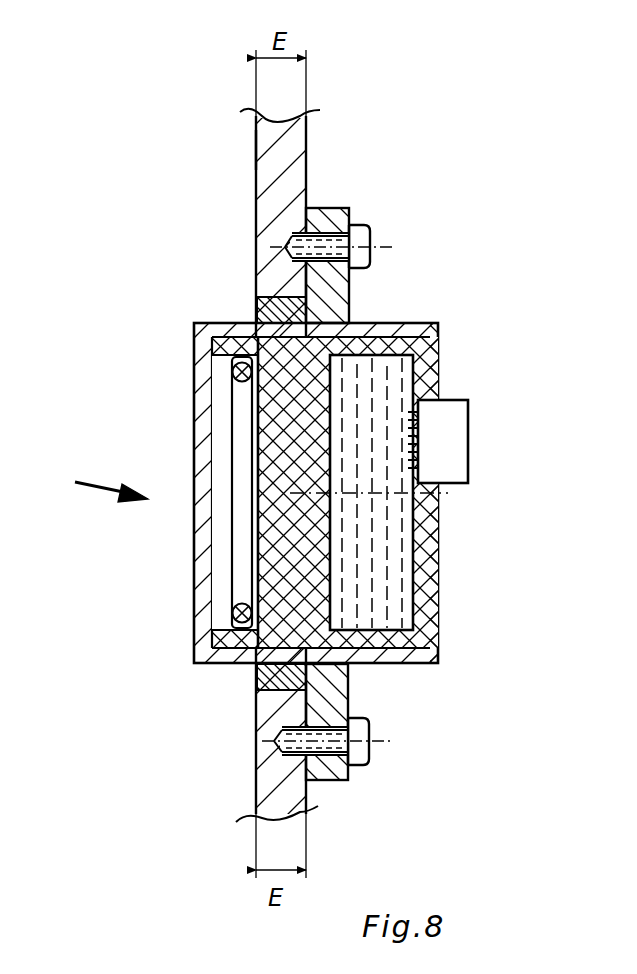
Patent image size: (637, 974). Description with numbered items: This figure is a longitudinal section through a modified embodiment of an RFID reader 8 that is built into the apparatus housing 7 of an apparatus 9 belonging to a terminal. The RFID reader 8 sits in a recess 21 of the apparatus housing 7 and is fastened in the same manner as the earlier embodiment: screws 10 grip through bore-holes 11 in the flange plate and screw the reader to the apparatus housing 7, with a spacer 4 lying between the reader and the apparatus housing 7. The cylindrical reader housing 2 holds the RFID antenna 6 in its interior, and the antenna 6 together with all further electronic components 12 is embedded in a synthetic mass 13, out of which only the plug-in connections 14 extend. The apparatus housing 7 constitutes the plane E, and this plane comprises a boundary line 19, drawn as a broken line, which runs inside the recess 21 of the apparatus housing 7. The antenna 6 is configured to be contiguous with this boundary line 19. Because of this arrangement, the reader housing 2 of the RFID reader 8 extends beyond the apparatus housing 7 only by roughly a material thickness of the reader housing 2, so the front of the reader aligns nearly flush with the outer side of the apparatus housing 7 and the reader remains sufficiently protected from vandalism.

The reader housing 2 is at (198, 390).
The spacer 4 is at (258, 307).
The RFID antenna 6 is at (242, 460).
The apparatus housing 7 is at (273, 205).
The RFID reader 8 is at (96, 484).
The apparatus 9 is at (252, 147).
The screws 10 is at (358, 237).
The bore-holes 11 is at (323, 228).
The electronic components 12 is at (378, 515).
The synthetic mass 13 is at (300, 355).
The plug-in connections 14 is at (447, 443).
The boundary line 19 is at (240, 571).
The recess 21 is at (252, 667).